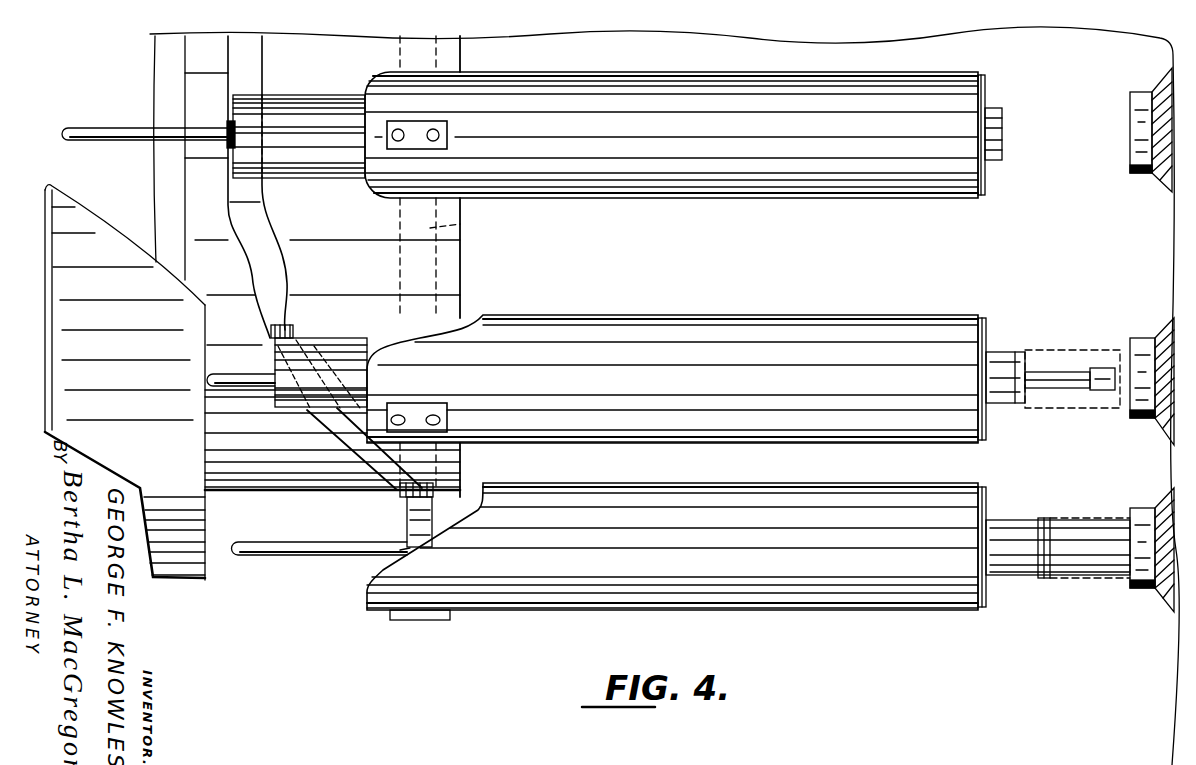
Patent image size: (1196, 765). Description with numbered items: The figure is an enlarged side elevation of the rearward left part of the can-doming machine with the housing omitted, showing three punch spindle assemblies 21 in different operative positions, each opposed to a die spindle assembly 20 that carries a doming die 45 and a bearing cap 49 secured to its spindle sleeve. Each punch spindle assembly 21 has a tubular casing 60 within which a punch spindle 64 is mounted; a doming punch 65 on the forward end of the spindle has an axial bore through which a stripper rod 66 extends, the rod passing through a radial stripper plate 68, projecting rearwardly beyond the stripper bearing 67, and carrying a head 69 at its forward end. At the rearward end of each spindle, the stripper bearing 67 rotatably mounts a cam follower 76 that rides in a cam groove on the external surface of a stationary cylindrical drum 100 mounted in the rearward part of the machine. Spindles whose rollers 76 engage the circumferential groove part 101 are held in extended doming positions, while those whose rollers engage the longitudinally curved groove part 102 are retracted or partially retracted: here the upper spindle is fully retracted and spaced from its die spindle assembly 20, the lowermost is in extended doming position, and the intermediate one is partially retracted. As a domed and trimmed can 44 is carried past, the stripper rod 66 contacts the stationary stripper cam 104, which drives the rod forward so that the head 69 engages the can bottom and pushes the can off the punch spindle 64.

The die spindle assembly 20 is at (1128, 100).
The punch spindle assembly 21 is at (671, 347).
The domed can 44 is at (1085, 348).
The doming die 45 is at (1128, 167).
The bearing cap 49 is at (1165, 82).
The tubular casing 60 is at (680, 192).
The punch spindle 64 is at (302, 103).
The doming punch 65 is at (1002, 146).
The stripper rod 66 is at (117, 128).
The stripper bearing 67 is at (400, 551).
The radial stripper plate 68 is at (985, 190).
The head 69 is at (1093, 368).
The cam follower 76 is at (230, 124).
The stationary cylindrical drum 100 is at (453, 302).
The cam groove part 101 is at (462, 223).
The cam groove part 102 is at (277, 286).
The stripper cam 104 is at (112, 253).